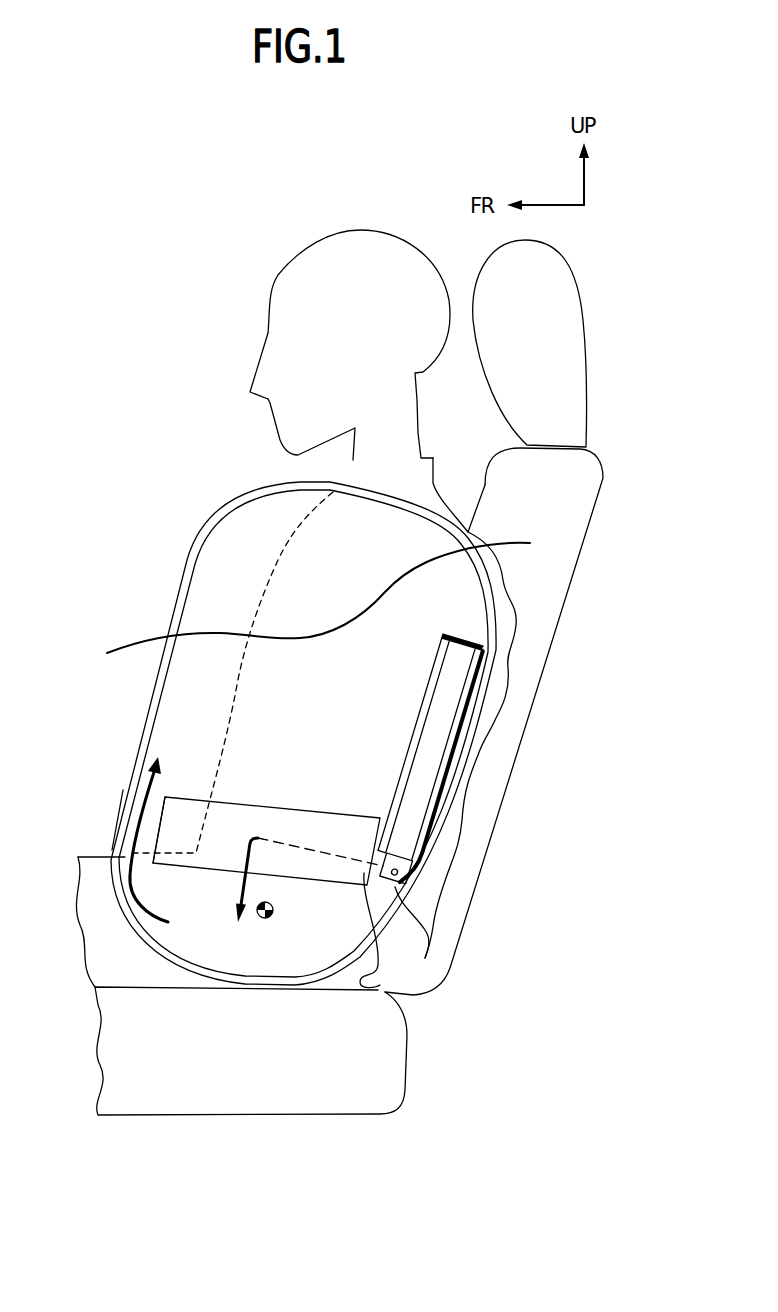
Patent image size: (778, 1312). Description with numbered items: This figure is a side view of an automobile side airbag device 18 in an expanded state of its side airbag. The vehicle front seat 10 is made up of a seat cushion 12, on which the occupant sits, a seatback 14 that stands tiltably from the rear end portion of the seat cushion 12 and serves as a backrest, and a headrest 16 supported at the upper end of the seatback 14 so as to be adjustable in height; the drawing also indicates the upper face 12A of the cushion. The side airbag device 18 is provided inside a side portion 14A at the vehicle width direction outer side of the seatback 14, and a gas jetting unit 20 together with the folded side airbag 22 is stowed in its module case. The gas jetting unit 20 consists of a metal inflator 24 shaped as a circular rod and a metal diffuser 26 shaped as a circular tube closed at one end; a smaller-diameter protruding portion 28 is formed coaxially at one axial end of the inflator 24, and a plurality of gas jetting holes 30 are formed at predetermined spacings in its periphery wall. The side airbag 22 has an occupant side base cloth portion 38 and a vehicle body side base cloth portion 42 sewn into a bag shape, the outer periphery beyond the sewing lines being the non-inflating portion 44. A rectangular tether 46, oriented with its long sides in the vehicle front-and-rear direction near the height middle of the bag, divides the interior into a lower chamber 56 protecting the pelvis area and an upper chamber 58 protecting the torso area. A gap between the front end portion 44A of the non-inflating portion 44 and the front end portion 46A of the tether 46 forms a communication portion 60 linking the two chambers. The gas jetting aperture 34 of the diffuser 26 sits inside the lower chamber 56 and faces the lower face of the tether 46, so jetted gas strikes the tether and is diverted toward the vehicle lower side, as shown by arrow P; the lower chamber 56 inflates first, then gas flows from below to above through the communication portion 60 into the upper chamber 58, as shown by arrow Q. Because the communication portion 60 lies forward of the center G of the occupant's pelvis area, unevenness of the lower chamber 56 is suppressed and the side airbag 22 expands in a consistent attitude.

The front seat 10 is at (620, 458).
The seat cushion 12 is at (241, 1007).
The seat cushion upper surface 12A is at (280, 1090).
The seatback 14 is at (528, 721).
The side portion 14A is at (530, 677).
The headrest 16 is at (575, 353).
The side airbag device 18 is at (141, 599).
The gas jetting unit 20 is at (492, 801).
The side airbag 22 is at (117, 713).
The inflator 24 is at (430, 748).
The diffuser 26 is at (441, 766).
The protruding portion 28 is at (430, 927).
The gas jetting holes 30 is at (396, 868).
The gas jetting aperture 34 is at (372, 987).
The occupant side base cloth portion 38 is at (223, 940).
The vehicle body side base cloth portion 42 is at (246, 530).
The non-inflating portion 44 is at (188, 572).
The front end portion of the non-inflating portion 44A is at (124, 800).
The tether 46 is at (269, 795).
The front end portion of the tether 46A is at (168, 822).
The lower chamber 56 is at (196, 938).
The upper chamber 58 is at (333, 698).
The communication portion 60 is at (140, 792).
The arrow P is at (232, 887).
The arrow Q is at (130, 823).
The center of the pelvis area G is at (277, 905).